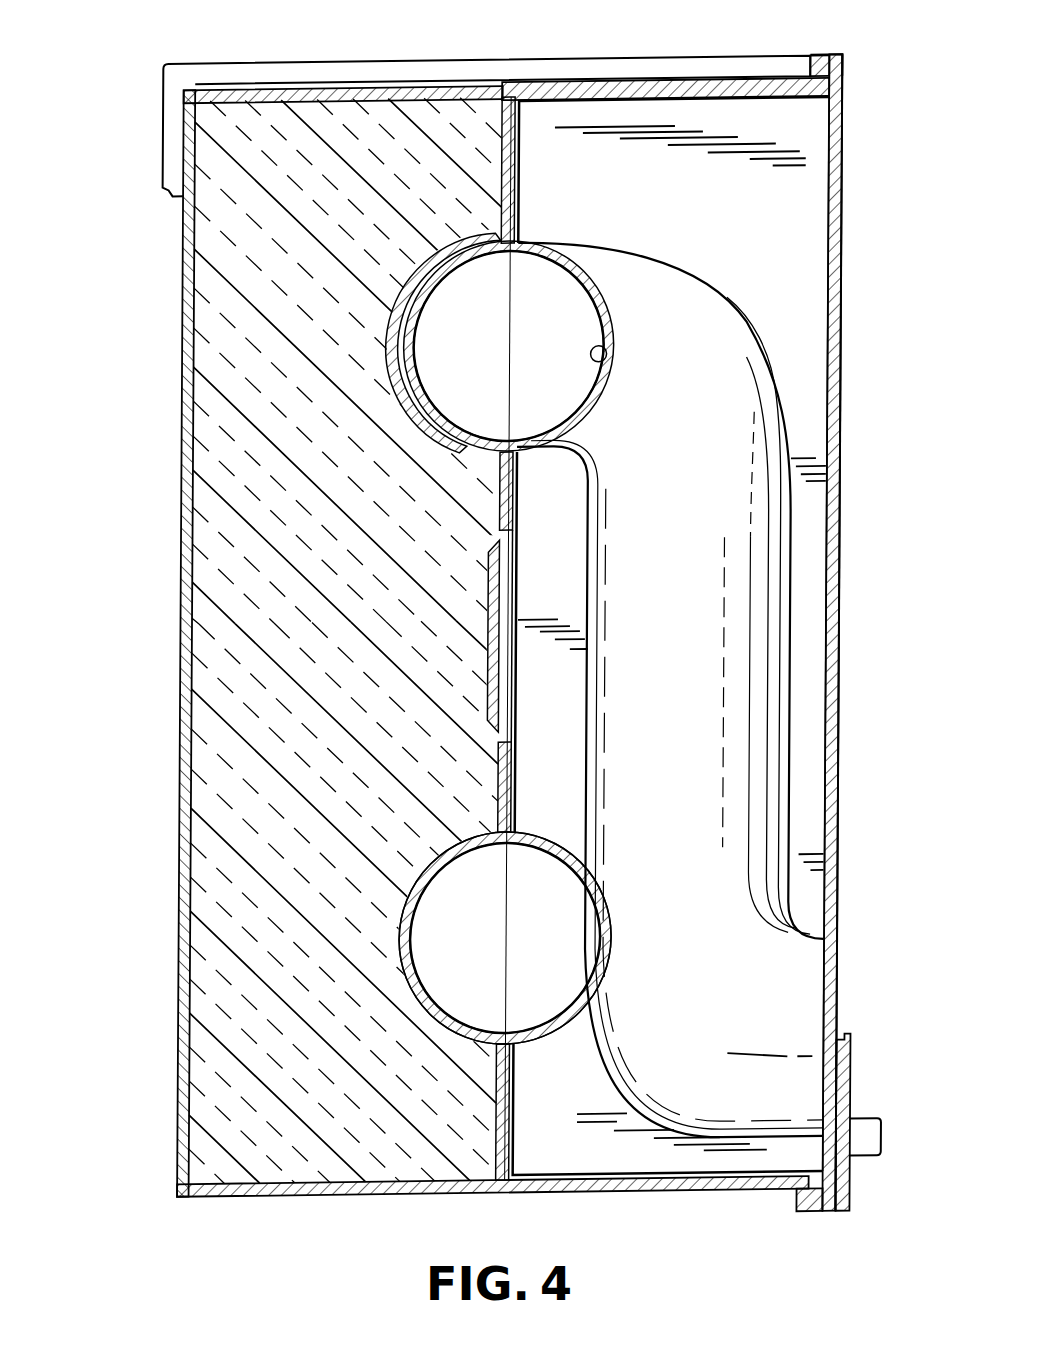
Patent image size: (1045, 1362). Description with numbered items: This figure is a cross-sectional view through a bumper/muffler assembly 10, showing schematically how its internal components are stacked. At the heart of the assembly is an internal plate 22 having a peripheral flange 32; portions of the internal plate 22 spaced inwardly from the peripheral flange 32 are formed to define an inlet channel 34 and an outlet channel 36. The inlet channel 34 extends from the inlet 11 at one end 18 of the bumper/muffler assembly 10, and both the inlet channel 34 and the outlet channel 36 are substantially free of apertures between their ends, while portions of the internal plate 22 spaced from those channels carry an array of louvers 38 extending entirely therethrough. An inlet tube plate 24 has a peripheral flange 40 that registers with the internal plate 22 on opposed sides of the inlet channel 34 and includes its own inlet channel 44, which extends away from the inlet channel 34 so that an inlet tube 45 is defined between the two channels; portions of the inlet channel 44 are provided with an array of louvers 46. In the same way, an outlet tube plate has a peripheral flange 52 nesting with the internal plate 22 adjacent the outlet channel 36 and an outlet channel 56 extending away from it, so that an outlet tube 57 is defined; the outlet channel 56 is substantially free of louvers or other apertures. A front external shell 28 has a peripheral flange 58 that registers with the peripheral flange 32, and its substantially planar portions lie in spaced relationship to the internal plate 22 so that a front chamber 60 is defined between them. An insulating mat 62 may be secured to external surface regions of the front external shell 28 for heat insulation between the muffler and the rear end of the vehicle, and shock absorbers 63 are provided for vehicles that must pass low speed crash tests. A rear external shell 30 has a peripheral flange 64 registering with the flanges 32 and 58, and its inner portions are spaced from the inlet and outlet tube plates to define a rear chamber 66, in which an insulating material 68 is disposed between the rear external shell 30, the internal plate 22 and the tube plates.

The bumper/muffler assembly 10 is at (153, 472).
The inlet 11 is at (815, 990).
The end of the bumper/muffler assembly 18 is at (817, 128).
The internal plate 22 is at (530, 120).
The inlet tube plate 24 is at (456, 244).
The front external shell 28 is at (843, 620).
The rear external shell 30 is at (178, 820).
The peripheral flange of the internal plate 32 is at (822, 58).
The inlet channel of the internal plate 34 is at (613, 327).
The outlet channel of the internal plate 36 is at (398, 968).
The array of louvers 38 is at (488, 638).
The peripheral flange of the inlet tube plate 40 is at (491, 158).
The inlet channel of the inlet tube plate 44 is at (452, 428).
The inlet tube 45 is at (617, 368).
The array of louvers 46 is at (382, 352).
The peripheral flange of the outlet tube plate 52 is at (490, 1113).
The outlet channel of the outlet tube plate 56 is at (405, 940).
The outlet tube 57 is at (465, 1012).
The peripheral flange of the front external shell 58 is at (845, 58).
The front chamber 60 is at (821, 513).
The insulating mat 62 is at (847, 1098).
The shock absorber 63 is at (873, 1162).
The peripheral flange of the rear external shell 64 is at (808, 60).
The rear chamber 66 is at (208, 558).
The insulating material 68 is at (220, 1058).